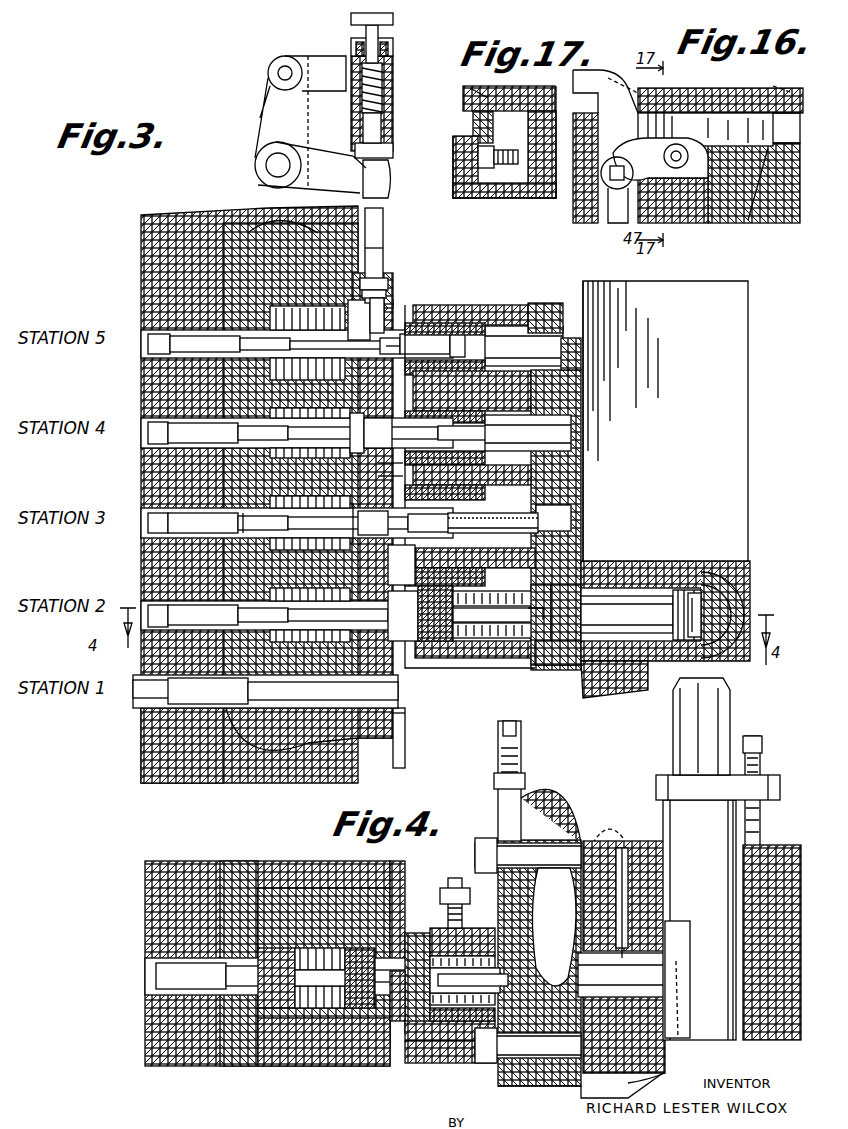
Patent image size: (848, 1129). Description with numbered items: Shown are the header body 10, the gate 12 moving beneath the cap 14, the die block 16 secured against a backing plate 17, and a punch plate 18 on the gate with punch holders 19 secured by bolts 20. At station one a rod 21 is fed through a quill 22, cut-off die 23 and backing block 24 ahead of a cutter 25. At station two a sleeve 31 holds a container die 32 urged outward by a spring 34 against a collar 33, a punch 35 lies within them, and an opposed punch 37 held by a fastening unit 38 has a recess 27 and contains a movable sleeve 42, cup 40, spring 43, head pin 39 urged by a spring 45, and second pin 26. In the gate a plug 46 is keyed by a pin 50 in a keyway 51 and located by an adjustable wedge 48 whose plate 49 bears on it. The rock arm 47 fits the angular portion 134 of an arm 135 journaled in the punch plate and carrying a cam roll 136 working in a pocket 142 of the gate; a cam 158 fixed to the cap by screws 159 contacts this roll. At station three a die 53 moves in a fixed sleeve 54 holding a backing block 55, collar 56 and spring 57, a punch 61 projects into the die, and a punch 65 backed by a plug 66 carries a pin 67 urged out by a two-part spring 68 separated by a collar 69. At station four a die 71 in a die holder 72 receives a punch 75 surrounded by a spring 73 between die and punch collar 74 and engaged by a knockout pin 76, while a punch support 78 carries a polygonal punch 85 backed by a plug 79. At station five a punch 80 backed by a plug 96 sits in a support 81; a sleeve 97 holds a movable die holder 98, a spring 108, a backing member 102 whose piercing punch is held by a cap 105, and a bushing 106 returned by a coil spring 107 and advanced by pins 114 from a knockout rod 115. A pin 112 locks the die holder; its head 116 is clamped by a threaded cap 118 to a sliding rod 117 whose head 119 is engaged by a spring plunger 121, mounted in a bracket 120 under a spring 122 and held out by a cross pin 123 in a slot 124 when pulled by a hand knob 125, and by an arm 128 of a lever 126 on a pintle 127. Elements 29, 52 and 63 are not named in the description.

In FIG. 3, the header body 10 is at (203, 205).
In FIG. 4, the header body 10 is at (148, 1058).
In FIG. 3, the gate 12 is at (728, 444).
In FIG. 17, the gate 12 is at (485, 198).
In FIG. 16, the gate 12 is at (775, 210).
In FIG. 4, the gate 12 is at (775, 837).
In FIG. 17, the cap 14 is at (520, 72).
In FIG. 16, the cap 14 is at (680, 78).
In FIG. 3, the die block 16 is at (370, 735).
In FIG. 4, the die block 16 is at (345, 1050).
In FIG. 3, the backing plate 17 is at (215, 740).
In FIG. 4, the backing plate 17 is at (225, 1058).
In FIG. 3, the punch plate 18 is at (537, 296).
In FIG. 4, the punch plate 18 is at (530, 1085).
In FIG. 3, the punch holders 19 is at (545, 650).
In FIG. 4, the punch holders 19 is at (440, 1060).
In FIG. 4, the companion bolts 20 is at (470, 840).
In FIG. 3, the rod or wire length 21 is at (130, 690).
In FIG. 3, the quill 22 is at (165, 695).
In FIG. 3, the cut-off die 23 is at (398, 745).
In FIG. 3, the backing block 24 is at (262, 715).
In FIG. 3, the cutter 25 is at (397, 722).
In FIG. 3, the second pin 26 is at (425, 630).
In FIG. 4, the second pin 26 is at (398, 1025).
In FIG. 4, the recess or cavity 27 is at (372, 1040).
In FIG. 4, the cover 29 is at (390, 910).
In FIG. 3, the sleeve 31 is at (475, 612).
In FIG. 4, the sleeve 31 is at (290, 1010).
In FIG. 3, the container die 32 is at (465, 600).
In FIG. 4, the container die 32 is at (320, 1000).
In FIG. 3, the collar 33 is at (300, 615).
In FIG. 4, the collar 33 is at (272, 1000).
In FIG. 3, the spring 34 is at (450, 630).
In FIG. 4, the spring 34 is at (300, 1000).
In FIG. 3, the punch 35 is at (262, 628).
In FIG. 4, the punch 35 is at (345, 1000).
In FIG. 3, the punch 37 is at (400, 620).
In FIG. 4, the punch 37 is at (395, 960).
In FIG. 4, the fastening unit 38 is at (440, 870).
In FIG. 3, the head pin 39 is at (545, 630).
In FIG. 4, the head pin 39 is at (450, 997).
In FIG. 3, the cup 40 is at (575, 585).
In FIG. 4, the cup 40 is at (470, 985).
In FIG. 3, the movable sleeve 42 is at (510, 625).
In FIG. 4, the movable sleeve 42 is at (410, 1033).
In FIG. 3, the spring 43 is at (530, 655).
In FIG. 4, the spring 43 is at (430, 1055).
In FIG. 3, the spring 45 is at (528, 620).
In FIG. 3, the plug 46 is at (625, 582).
In FIG. 4, the plug 46 is at (655, 975).
In FIG. 3, the rock arm 47 is at (590, 590).
In FIG. 4, the rock arm 47 is at (575, 960).
In FIG. 3, the axially adjustable wedge 48 is at (700, 560).
In FIG. 4, the axially adjustable wedge 48 is at (718, 859).
In FIG. 3, the plate 49 is at (686, 585).
In FIG. 4, the plate 49 is at (672, 1032).
In FIG. 4, the pin 50 is at (620, 880).
In FIG. 3, the keyway 51 is at (672, 582).
In FIG. 4, the keyway 51 is at (682, 950).
In FIG. 3, the workpiece 52 is at (145, 602).
In FIG. 4, the workpiece 52 is at (150, 968).
In FIG. 3, the die 53 is at (380, 470).
In FIG. 3, the fixed sleeve 54 is at (262, 492).
In FIG. 3, the backing block 55 is at (345, 510).
In FIG. 3, the collar 56 is at (350, 515).
In FIG. 3, the compression spring 57 is at (200, 515).
In FIG. 3, the punch 61 is at (235, 515).
In FIG. 3, the tool 63 is at (135, 512).
In FIG. 3, the punch 65 is at (401, 565).
In FIG. 3, the backing plug 66 is at (540, 518).
In FIG. 3, the pin 67 is at (500, 512).
In FIG. 3, the two part compression spring 68 is at (560, 518).
In FIG. 3, the collar 69 is at (540, 500).
In FIG. 3, the die 71 is at (375, 405).
In FIG. 3, the die holder 72 is at (378, 385).
In FIG. 3, the spring 73 is at (290, 430).
In FIG. 3, the punch collar 74 is at (262, 403).
In FIG. 3, the punch 75 is at (380, 455).
In FIG. 3, the knockout pin 76 is at (142, 418).
In FIG. 3, the punch support 78 is at (490, 445).
In FIG. 3, the plug 79 is at (545, 415).
In FIG. 3, the punch 80 is at (425, 330).
In FIG. 3, the support 81 is at (450, 325).
In FIG. 3, the punch 85 is at (450, 424).
In FIG. 3, the plug 96 is at (524, 346).
In FIG. 3, the sleeve 97 is at (392, 338).
In FIG. 3, the movable die holder 98 is at (390, 330).
In FIG. 3, the backing member 102 is at (262, 300).
In FIG. 3, the cap 105 is at (340, 312).
In FIG. 3, the bushing 106 is at (240, 265).
In FIG. 3, the coil spring 107 is at (374, 240).
In FIG. 3, the spring 108 is at (374, 230).
In FIG. 3, the pin 112 is at (376, 300).
In FIG. 3, the pins 114 is at (200, 344).
In FIG. 3, the knockout rod 115 is at (140, 328).
In FIG. 3, the head 116 is at (378, 286).
In FIG. 3, the sliding rod 117 is at (372, 192).
In FIG. 3, the threaded cap 118 is at (380, 272).
In FIG. 3, the head 119 is at (378, 150).
In FIG. 3, the bracket 120 is at (385, 80).
In FIG. 3, the spring plunger 121 is at (358, 30).
In FIG. 3, the compression spring 122 is at (380, 56).
In FIG. 3, the cross pin 123 is at (348, 42).
In FIG. 3, the slot 124 is at (380, 38).
In FIG. 3, the hand knob 125 is at (343, 11).
In FIG. 3, the lever 126 is at (258, 96).
In FIG. 3, the pintle 127 is at (258, 157).
In FIG. 3, the arm 128 is at (312, 150).
In FIG. 16, the angular portion 134 is at (608, 170).
In FIG. 4, the angular portion 134 is at (550, 875).
In FIG. 16, the arm 135 is at (625, 140).
In FIG. 4, the arm 135 is at (545, 820).
In FIG. 17, the cam roll 136 is at (478, 160).
In FIG. 16, the cam roll 136 is at (672, 162).
In FIG. 4, the cam roll 136 is at (600, 815).
In FIG. 16, the recess or pocket 142 is at (748, 212).
In FIG. 4, the recess or pocket 142 is at (737, 832).
In FIG. 17, the cam 158 is at (465, 118).
In FIG. 16, the cam 158 is at (720, 105).
In FIG. 17, the screws 159 is at (478, 76).
In FIG. 16, the screws 159 is at (695, 71).